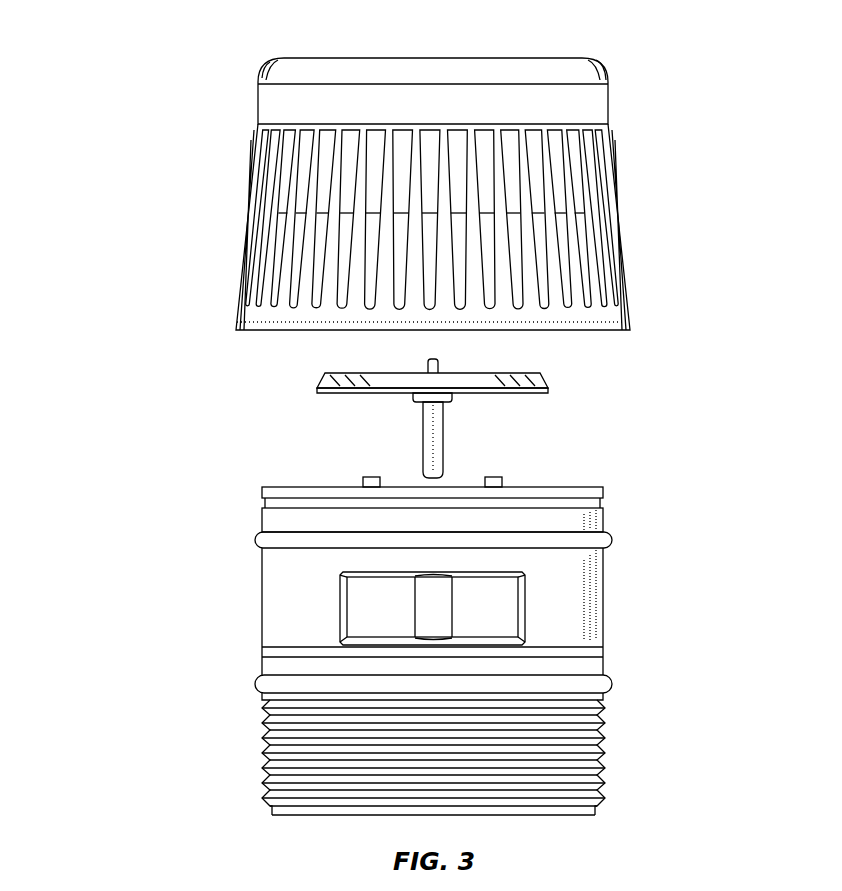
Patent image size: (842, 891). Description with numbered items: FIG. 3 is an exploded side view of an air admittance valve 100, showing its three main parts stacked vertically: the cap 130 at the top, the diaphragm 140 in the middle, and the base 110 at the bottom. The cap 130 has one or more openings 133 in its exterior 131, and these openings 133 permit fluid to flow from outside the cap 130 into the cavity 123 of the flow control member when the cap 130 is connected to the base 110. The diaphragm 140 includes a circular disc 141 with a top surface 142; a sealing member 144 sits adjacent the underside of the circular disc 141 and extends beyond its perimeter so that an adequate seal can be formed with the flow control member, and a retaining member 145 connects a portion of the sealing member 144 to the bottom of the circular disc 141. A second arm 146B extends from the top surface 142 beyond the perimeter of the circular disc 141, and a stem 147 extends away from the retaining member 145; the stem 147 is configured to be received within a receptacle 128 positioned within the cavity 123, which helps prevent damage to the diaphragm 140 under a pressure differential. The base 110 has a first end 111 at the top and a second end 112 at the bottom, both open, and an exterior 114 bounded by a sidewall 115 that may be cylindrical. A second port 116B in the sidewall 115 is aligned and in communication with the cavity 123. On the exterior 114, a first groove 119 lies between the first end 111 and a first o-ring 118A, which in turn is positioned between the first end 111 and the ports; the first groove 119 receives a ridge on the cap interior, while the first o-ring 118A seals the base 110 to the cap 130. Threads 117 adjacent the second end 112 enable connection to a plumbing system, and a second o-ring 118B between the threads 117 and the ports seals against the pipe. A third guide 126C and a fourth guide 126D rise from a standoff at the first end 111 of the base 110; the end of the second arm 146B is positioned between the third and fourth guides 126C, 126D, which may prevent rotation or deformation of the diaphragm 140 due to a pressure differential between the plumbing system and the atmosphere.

The air admittance valve 100 is at (165, 63).
The cap 130 is at (606, 98).
The openings 133 is at (292, 203).
The exterior of the cap 131 is at (240, 327).
The diaphragm 140 is at (236, 389).
The top surface of the circular disc 142 is at (520, 372).
The circular disc 141 is at (338, 389).
The sealing member 144 is at (396, 394).
The second arm 146B is at (428, 365).
The retaining member 145 is at (455, 397).
The stem 147 is at (440, 428).
The base 110 is at (656, 587).
The first end 111 is at (292, 487).
The third guide 126C is at (368, 477).
The fourth guide 126D is at (505, 479).
The first groove 119 is at (262, 505).
The exterior 114 is at (604, 518).
The first o-ring 118A is at (258, 541).
The sidewall 115 is at (315, 591).
The second port 116B is at (323, 612).
The cavity 123 is at (397, 619).
The receptacle 128 is at (444, 617).
The second o-ring 118B is at (260, 684).
The threads 117 is at (262, 751).
The second end 112 is at (566, 816).